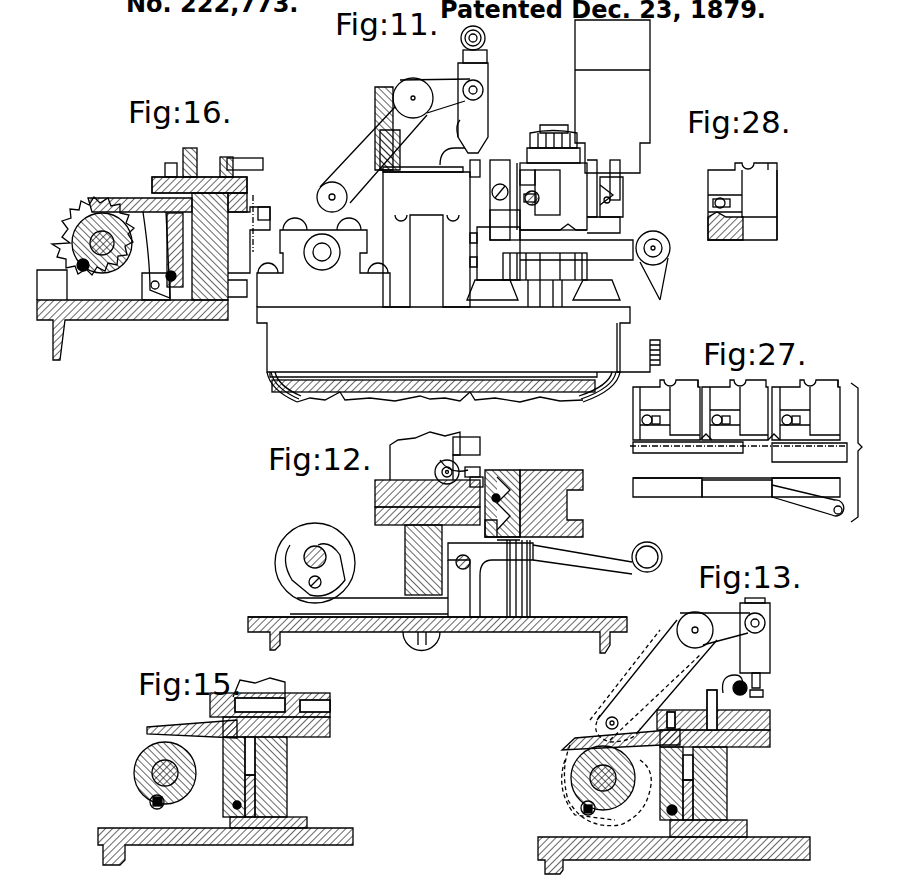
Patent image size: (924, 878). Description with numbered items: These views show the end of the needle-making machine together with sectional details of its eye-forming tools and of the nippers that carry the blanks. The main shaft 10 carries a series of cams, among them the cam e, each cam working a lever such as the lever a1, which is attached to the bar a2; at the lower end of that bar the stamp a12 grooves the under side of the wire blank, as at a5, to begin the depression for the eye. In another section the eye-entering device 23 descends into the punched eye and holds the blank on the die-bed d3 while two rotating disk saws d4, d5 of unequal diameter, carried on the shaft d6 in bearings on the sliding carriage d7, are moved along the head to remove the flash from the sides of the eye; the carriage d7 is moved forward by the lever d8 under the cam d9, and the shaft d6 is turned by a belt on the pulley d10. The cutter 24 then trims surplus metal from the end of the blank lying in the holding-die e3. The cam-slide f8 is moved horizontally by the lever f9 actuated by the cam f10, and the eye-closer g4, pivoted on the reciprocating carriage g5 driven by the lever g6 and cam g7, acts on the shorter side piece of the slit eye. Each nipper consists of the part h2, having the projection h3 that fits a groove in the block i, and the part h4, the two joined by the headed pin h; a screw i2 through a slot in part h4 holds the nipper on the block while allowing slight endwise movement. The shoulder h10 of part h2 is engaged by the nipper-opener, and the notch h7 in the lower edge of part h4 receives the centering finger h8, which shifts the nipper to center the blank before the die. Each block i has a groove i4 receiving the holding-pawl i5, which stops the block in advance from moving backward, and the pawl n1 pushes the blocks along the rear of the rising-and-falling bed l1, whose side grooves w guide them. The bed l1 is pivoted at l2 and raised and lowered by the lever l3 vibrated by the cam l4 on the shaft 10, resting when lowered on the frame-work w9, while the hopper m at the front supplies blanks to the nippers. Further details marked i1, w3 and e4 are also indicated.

In FIG. 11, the hopper m is at (612, 96).
In FIG. 11, the bar a2 is at (463, 55).
In FIG. 11, the lever a1 is at (372, 150).
In FIG. 11, the stamp a12 is at (455, 147).
In FIG. 11, the groove in blank a5 is at (470, 166).
In FIG. 11, the headed pin h is at (490, 198).
In FIG. 12, the headed pin h is at (491, 498).
In FIG. 11, the nipper part h2 is at (572, 200).
In FIG. 28, the nipper part h2 is at (742, 201).
In FIG. 27, the nipper part h2 is at (736, 410).
In FIG. 12, the nipper part h2 is at (485, 526).
In FIG. 11, the projection h3 is at (611, 197).
In FIG. 12, the projection h3 is at (515, 480).
In FIG. 11, the nipper part h4 is at (634, 185).
In FIG. 28, the nipper part h4 is at (725, 195).
In FIG. 27, the nipper part h4 is at (715, 408).
In FIG. 11, the notch h7 is at (553, 223).
In FIG. 27, the notch h7 is at (772, 443).
In FIG. 16, the finger h8 is at (270, 209).
In FIG. 28, the finger h8 is at (710, 224).
In FIG. 11, the shoulder h10 is at (587, 162).
In FIG. 28, the shoulder h10 is at (772, 168).
In FIG. 27, the shoulder h10 is at (698, 382).
In FIG. 11, the block i is at (516, 186).
In FIG. 11, the bar i1 is at (596, 224).
In FIG. 28, the bar i1 is at (783, 205).
In FIG. 27, the bar i1 is at (736, 486).
In FIG. 12, the bar i1 is at (500, 535).
In FIG. 11, the screw i2 is at (648, 203).
In FIG. 28, the screw i2 is at (713, 203).
In FIG. 27, the screw i2 is at (711, 416).
In FIG. 27, the groove i4 is at (737, 474).
In FIG. 27, the holding-pawl i5 is at (809, 484).
In FIG. 11, the pawl n1 is at (505, 225).
In FIG. 11, the rising-and-falling bed l1 is at (595, 265).
In FIG. 12, the rising-and-falling bed l1 is at (568, 490).
In FIG. 12, the pivot l2 is at (636, 568).
In FIG. 12, the lever l3 is at (490, 580).
In FIG. 12, the cam l4 is at (309, 582).
In FIG. 12, the grooves w is at (572, 508).
In FIG. 12, the rods w3 is at (507, 592).
In FIG. 12, the frame-work w9 is at (495, 633).
In FIG. 12, the main shaft 10 is at (304, 557).
In FIG. 13, the main shaft 10 is at (590, 777).
In FIG. 15, the main shaft 10 is at (155, 762).
In FIG. 12, the eye-entering device 23 is at (474, 467).
In FIG. 13, the cutter 24 is at (747, 686).
In FIG. 12, the die-bed d3 is at (483, 478).
In FIG. 12, the rotating disk cutter d4 is at (435, 466).
In FIG. 12, the rotating disk cutter d5 is at (437, 460).
In FIG. 12, the shaft d6 is at (375, 498).
In FIG. 13, the shaft d6 is at (745, 695).
In FIG. 13, the sliding carriage d7 is at (770, 726).
In FIG. 13, the lever d8 is at (621, 750).
In FIG. 13, the cam d9 is at (581, 808).
In FIG. 13, the pulley d10 is at (727, 685).
In FIG. 13, the cam e is at (680, 670).
In FIG. 13, the holding-die e3 is at (764, 694).
In FIG. 13, the pin e4 is at (762, 680).
In FIG. 15, the cam-slide f8 is at (210, 713).
In FIG. 15, the lever f9 is at (185, 740).
In FIG. 15, the cam f10 is at (150, 802).
In FIG. 16, the eye-closer g4 is at (263, 163).
In FIG. 16, the reciprocating carriage g5 is at (152, 180).
In FIG. 16, the lever g6 is at (112, 200).
In FIG. 16, the cam g7 is at (80, 270).